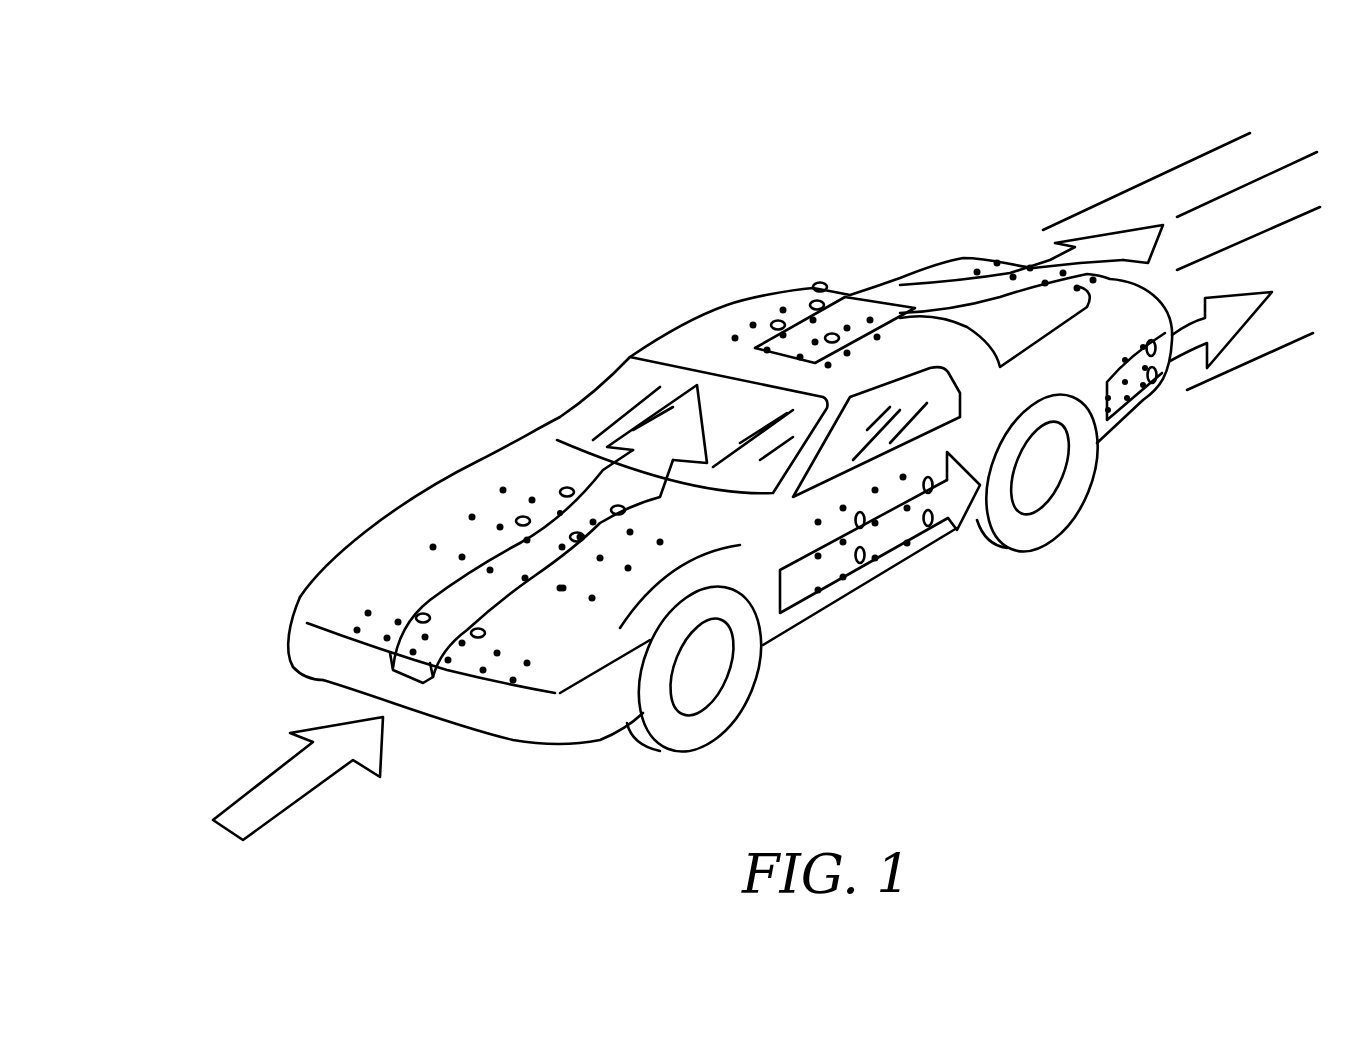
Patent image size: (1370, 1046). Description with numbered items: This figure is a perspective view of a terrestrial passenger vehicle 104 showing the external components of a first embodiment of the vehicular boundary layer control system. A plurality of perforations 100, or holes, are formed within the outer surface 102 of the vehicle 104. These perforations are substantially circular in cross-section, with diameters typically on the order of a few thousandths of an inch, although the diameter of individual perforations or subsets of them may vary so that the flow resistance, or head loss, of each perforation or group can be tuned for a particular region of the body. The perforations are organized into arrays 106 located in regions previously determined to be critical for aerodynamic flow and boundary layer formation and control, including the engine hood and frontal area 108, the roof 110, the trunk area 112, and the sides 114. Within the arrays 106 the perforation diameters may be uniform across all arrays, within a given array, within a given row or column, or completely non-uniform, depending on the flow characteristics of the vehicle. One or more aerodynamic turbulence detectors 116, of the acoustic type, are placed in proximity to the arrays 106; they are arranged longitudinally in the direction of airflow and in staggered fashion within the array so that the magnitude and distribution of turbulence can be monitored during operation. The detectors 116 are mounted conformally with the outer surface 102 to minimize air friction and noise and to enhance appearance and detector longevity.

The perforations 100 is at (433, 546).
The outer surface 102 is at (692, 352).
The vehicle 104 is at (563, 772).
The arrays of perforations 106 is at (821, 276).
The engine hood and frontal area 108 is at (382, 660).
The roof 110 is at (760, 238).
The trunk area 112 is at (967, 253).
The sides 114 is at (845, 620).
The aerodynamic turbulence detectors 116 is at (567, 488).